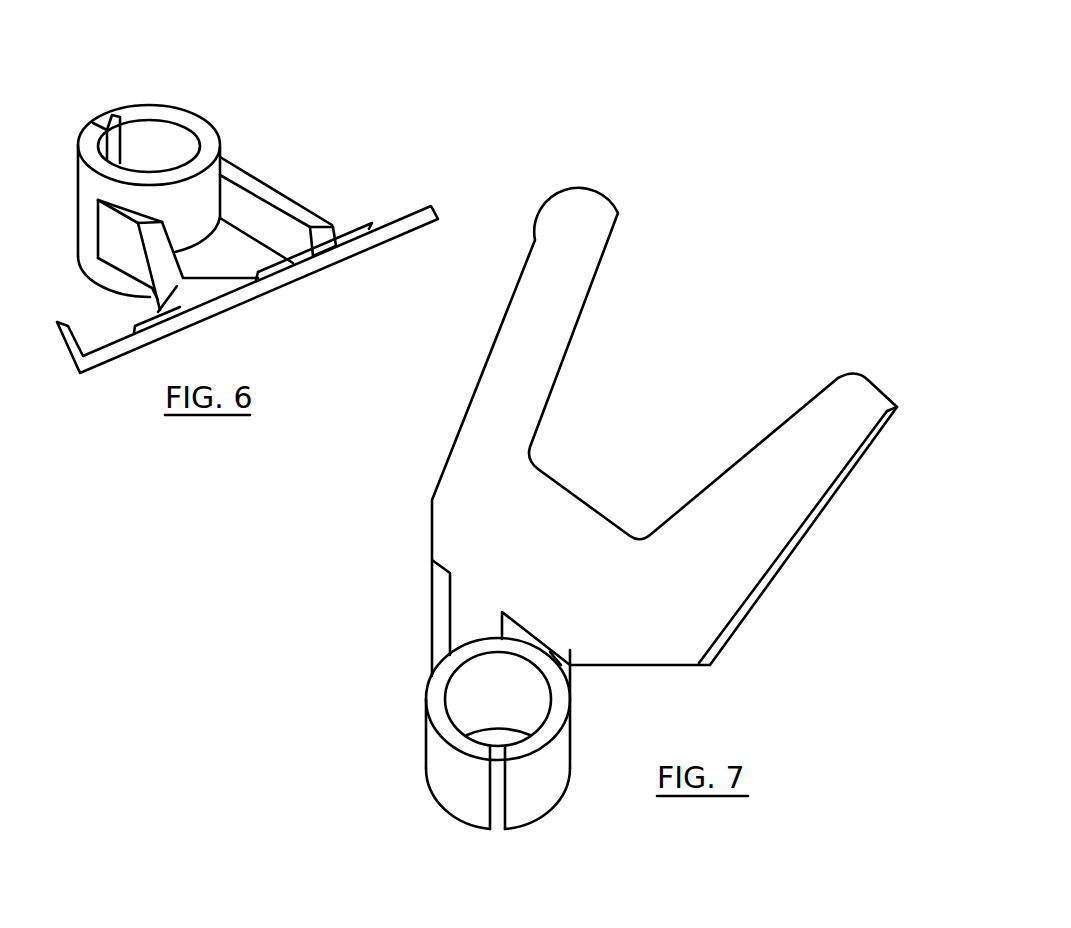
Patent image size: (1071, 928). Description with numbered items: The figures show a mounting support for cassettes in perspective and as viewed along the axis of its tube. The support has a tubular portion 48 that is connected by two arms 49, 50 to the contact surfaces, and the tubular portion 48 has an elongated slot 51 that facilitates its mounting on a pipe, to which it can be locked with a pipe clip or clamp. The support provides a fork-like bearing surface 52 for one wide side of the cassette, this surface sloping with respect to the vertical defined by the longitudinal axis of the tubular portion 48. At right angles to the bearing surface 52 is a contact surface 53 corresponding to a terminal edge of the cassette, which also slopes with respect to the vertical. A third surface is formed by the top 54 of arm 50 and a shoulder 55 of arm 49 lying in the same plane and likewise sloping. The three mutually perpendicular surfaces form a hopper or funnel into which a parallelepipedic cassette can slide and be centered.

In FIG. 6, the tubular portion 48 is at (188, 123).
In FIG. 7, the tubular portion 48 is at (445, 773).
In FIG. 6, the arm 49 is at (263, 180).
In FIG. 7, the arm 49 is at (431, 626).
In FIG. 6, the arm 50 is at (132, 258).
In FIG. 7, the arm 50 is at (574, 675).
In FIG. 6, the elongated slot 51 is at (103, 131).
In FIG. 7, the elongated slot 51 is at (498, 815).
In FIG. 7, the fork-like bearing surface 52 is at (702, 517).
In FIG. 7, the contact surface 53 is at (808, 520).
In FIG. 6, the top of arm 54 is at (157, 311).
In FIG. 6, the shoulder 55 is at (322, 237).